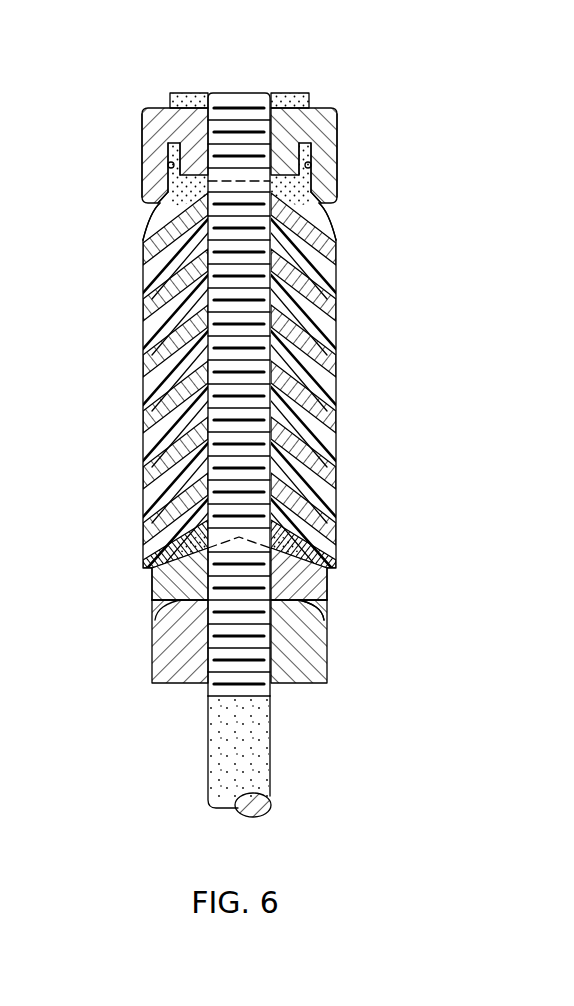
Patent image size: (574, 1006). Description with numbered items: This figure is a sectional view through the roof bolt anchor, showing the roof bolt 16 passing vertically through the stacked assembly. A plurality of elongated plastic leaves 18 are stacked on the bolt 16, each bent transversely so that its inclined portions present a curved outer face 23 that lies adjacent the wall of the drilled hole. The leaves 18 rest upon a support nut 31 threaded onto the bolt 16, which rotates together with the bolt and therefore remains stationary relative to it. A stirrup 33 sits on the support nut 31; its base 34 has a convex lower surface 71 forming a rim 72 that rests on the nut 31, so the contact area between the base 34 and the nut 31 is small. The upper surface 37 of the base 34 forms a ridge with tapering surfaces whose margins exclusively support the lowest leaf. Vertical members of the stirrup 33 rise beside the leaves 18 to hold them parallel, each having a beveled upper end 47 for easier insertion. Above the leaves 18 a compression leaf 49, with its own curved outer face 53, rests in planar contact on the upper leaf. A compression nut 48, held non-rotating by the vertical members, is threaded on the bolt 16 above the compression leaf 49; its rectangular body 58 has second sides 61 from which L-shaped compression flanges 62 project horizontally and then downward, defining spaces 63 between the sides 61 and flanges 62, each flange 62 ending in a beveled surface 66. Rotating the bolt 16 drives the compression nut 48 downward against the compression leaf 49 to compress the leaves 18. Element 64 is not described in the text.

The roof bolt 16 is at (235, 87).
The plastic leaves 18 is at (138, 455).
The curved outer face 23 is at (142, 362).
The support nut 31 is at (190, 684).
The stirrup 33 is at (333, 587).
The base 34 is at (150, 587).
The upper surface 37 is at (150, 527).
The upper end 47 is at (287, 92).
The compression nut 48 is at (154, 104).
The compression leaf 49 is at (139, 257).
The curved outer face 53 is at (337, 253).
The rectangular body 58 is at (194, 148).
The second pair of opposing sides 61 is at (172, 158).
The L-shaped compression flanges 62 is at (136, 177).
The spaces 63 is at (168, 165).
The chamfered lip 64 is at (165, 191).
The beveled surface 66 is at (150, 217).
The convex lower surface 71 is at (310, 617).
The rim 72 is at (155, 607).